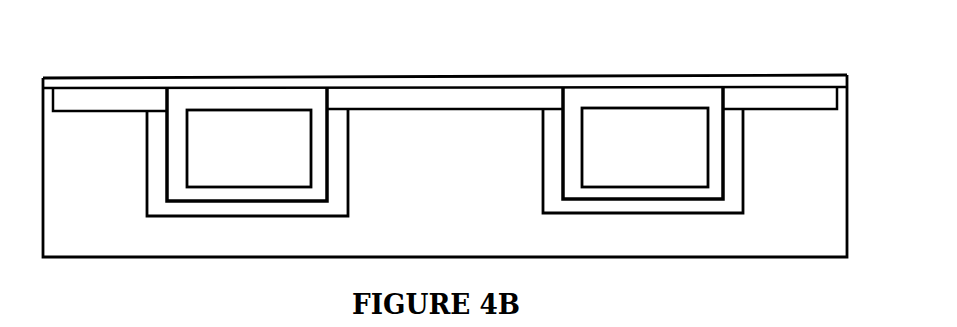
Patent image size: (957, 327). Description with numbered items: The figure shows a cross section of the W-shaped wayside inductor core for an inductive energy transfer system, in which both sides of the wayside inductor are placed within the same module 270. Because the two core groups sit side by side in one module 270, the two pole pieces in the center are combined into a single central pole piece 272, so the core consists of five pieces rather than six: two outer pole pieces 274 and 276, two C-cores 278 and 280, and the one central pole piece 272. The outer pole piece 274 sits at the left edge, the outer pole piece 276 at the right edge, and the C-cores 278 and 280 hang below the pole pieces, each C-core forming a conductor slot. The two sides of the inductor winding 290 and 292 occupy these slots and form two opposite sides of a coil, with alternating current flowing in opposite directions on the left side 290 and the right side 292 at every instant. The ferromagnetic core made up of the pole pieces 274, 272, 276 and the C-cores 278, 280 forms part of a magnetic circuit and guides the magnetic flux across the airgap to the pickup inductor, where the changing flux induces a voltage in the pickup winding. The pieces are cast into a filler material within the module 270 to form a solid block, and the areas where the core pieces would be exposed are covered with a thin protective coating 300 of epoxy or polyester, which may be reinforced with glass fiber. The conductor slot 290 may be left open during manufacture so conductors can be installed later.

The module 270 is at (445, 166).
The central pole piece 272 is at (470, 109).
The outer pole piece 274 is at (130, 115).
The outer pole piece 276 is at (828, 110).
The C-core 278 is at (282, 217).
The C-core 280 is at (678, 215).
The inductor winding side 290 is at (249, 148).
The inductor winding side 292 is at (645, 147).
The protective coating 300 is at (790, 77).